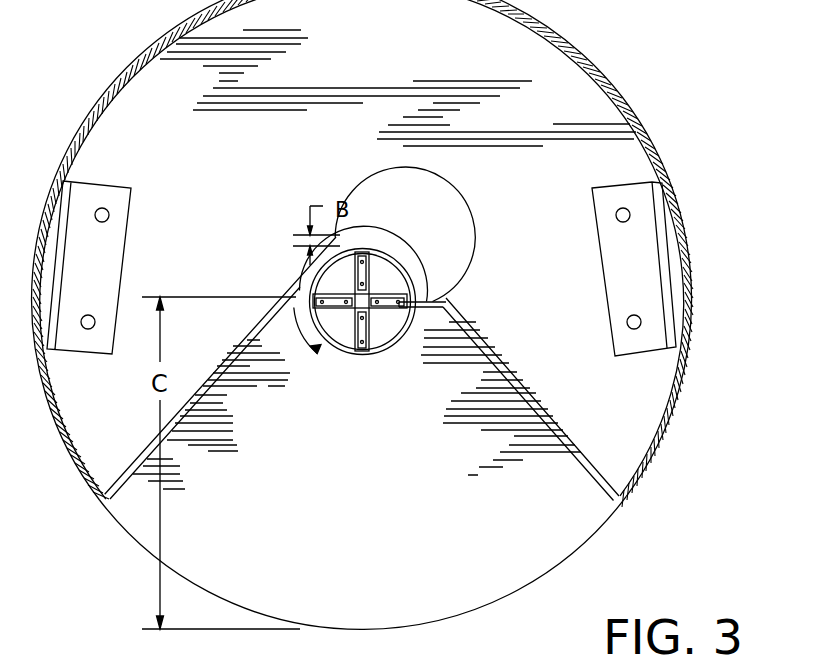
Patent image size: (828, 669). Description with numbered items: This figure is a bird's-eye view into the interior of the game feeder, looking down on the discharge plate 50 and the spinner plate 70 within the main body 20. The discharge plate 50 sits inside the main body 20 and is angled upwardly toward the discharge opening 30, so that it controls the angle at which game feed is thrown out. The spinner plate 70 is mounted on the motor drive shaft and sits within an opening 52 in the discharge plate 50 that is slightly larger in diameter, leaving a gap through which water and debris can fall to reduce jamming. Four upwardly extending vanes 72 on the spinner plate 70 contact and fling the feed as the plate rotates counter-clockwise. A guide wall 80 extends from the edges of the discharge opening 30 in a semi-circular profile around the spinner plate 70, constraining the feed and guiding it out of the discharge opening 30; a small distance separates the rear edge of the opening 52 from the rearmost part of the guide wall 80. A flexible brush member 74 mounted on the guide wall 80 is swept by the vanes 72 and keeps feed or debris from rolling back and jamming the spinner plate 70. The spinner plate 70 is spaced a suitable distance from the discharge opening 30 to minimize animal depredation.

The main body 20 is at (627, 102).
The discharge opening 30 is at (598, 530).
The discharge plate 50 is at (377, 520).
The opening 52 is at (471, 324).
The spinner plate 70 is at (342, 331).
The vanes 72 is at (386, 292).
The brush member 74 is at (449, 297).
The guide wall 80 is at (376, 232).